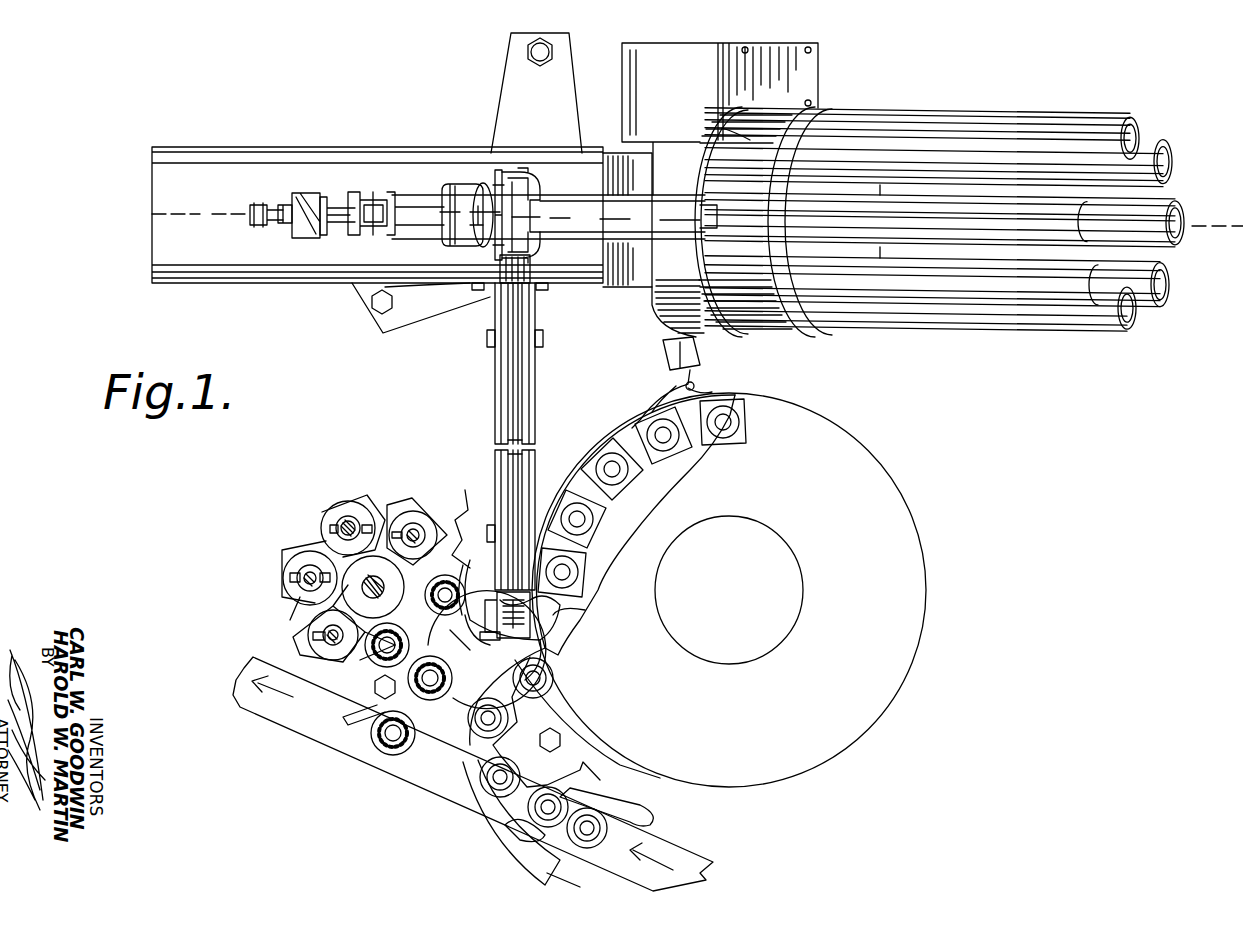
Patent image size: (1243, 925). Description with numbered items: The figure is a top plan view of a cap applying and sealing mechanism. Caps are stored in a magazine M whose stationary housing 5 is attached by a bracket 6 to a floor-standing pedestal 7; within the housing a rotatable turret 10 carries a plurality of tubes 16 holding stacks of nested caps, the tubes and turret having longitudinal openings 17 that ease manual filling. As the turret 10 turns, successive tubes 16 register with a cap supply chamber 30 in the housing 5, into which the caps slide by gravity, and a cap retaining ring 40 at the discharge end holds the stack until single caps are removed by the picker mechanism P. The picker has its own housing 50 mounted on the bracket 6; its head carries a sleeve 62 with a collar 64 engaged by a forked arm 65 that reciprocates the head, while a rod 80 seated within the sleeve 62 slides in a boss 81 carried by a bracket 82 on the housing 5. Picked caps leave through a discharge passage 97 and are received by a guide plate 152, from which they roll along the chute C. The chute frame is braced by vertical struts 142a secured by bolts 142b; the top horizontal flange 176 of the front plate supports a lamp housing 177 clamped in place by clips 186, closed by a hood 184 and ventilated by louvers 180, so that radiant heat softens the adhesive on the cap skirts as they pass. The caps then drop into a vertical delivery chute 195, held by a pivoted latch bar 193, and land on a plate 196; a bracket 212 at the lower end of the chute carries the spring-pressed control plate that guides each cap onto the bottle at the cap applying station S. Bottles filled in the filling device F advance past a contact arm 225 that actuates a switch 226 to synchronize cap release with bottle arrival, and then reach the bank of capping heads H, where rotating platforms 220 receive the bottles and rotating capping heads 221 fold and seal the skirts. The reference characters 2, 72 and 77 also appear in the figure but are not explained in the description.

The stationary housing 5 is at (143, 210).
The section line 2 is at (292, 245).
The bracket 6 is at (382, 153).
The pedestal 7 is at (536, 93).
The rotatable turret 10 is at (543, 657).
The tubes 16 is at (1150, 136).
The longitudinal openings 17 is at (735, 141).
The cap supply chamber 30 is at (554, 217).
The cap retaining ring 40 is at (523, 176).
The picker housing 50 is at (446, 215).
The sleeve 62 is at (335, 222).
The collar 64 is at (390, 192).
The forked arm 65 is at (383, 235).
The collar flange 72 is at (478, 230).
The bracket plate 77 is at (498, 170).
The rod 80 is at (320, 190).
The boss 81 is at (281, 205).
The bracket 82 is at (318, 238).
The discharge passage 97 is at (250, 213).
The vertical struts 142a is at (478, 294).
The bolts 142b is at (430, 324).
The guide plate 152 is at (482, 232).
The top horizontal flange 176 is at (494, 434).
The lamp housing 177 is at (550, 452).
The louvers 180 is at (512, 402).
The hood 184 is at (478, 384).
The clips 186 is at (486, 340).
The pivoted latch bar 193 is at (558, 771).
The vertical delivery chute 195 is at (545, 600).
The plate 196 is at (545, 624).
The bracket 212 is at (492, 640).
The rotating platforms 220 is at (405, 590).
The rotating capping heads 221 is at (415, 512).
The contact arm 225 is at (667, 396).
The switch 226 is at (690, 356).
The chute C is at (476, 403).
The filling device F is at (729, 590).
The capping heads H is at (350, 506).
The magazine M is at (989, 104).
The picker mechanism P is at (446, 180).
The cap applying station S is at (447, 660).